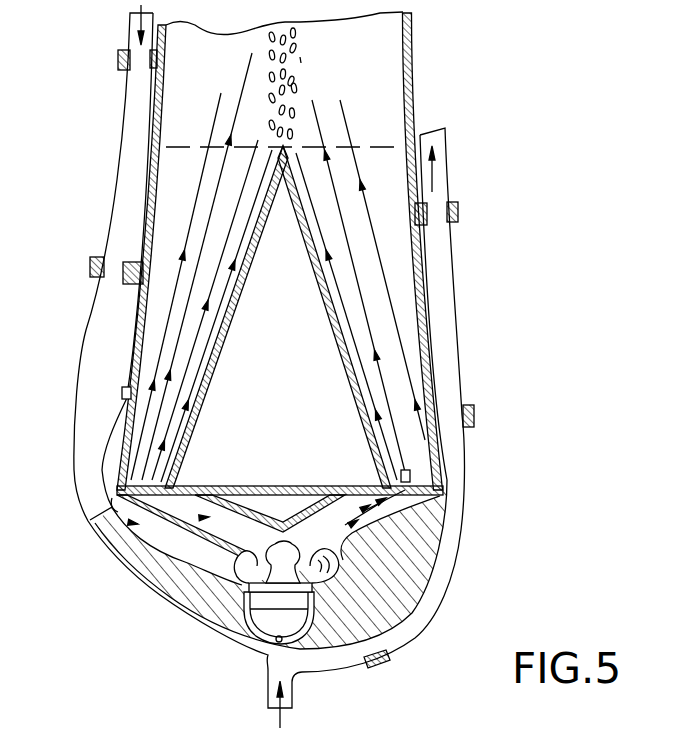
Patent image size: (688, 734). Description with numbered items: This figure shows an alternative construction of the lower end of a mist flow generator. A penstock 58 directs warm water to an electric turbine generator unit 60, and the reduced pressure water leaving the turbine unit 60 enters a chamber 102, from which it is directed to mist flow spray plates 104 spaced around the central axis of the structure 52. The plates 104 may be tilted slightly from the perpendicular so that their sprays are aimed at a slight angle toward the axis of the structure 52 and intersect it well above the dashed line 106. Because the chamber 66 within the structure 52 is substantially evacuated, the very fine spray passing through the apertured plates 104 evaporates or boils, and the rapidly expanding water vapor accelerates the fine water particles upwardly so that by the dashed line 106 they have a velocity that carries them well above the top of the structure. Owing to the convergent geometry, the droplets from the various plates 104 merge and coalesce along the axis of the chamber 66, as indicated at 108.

The structure 52 is at (413, 72).
The penstock 58 is at (122, 236).
The electric turbine generator unit 60 is at (243, 584).
The chamber 66 is at (251, 62).
The chamber 102 is at (395, 505).
The mist flow spray plates 104 is at (128, 392).
The dashed line 106 is at (340, 147).
The merging and coalescing of water droplets 108 is at (292, 95).